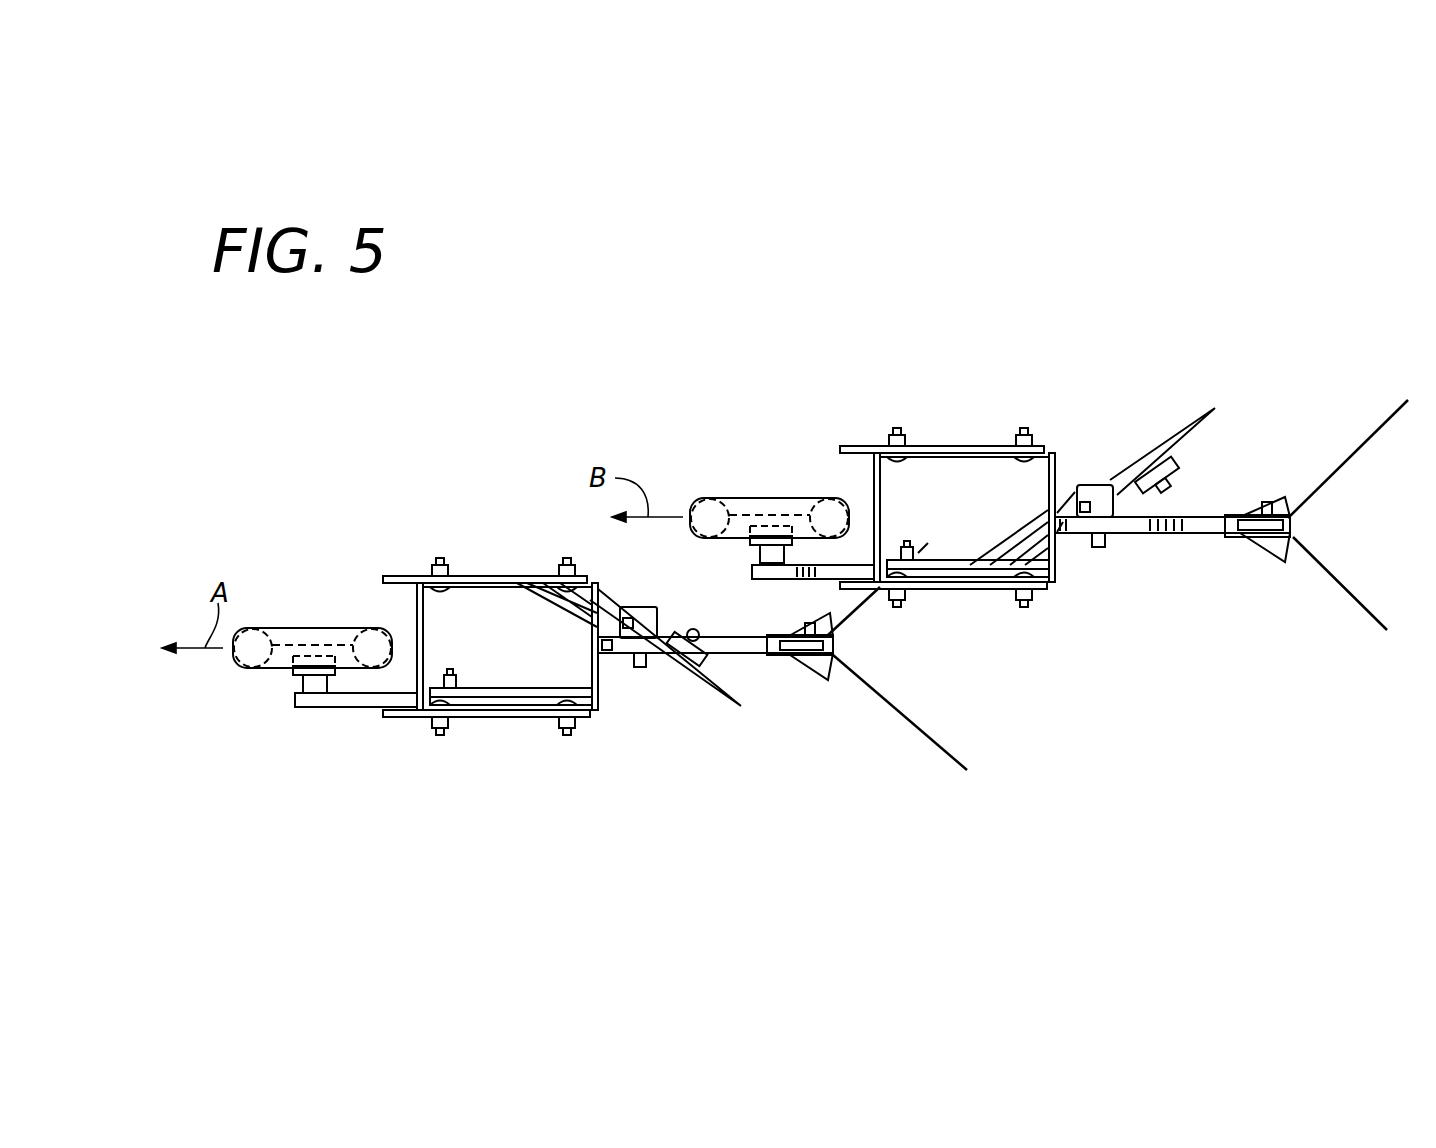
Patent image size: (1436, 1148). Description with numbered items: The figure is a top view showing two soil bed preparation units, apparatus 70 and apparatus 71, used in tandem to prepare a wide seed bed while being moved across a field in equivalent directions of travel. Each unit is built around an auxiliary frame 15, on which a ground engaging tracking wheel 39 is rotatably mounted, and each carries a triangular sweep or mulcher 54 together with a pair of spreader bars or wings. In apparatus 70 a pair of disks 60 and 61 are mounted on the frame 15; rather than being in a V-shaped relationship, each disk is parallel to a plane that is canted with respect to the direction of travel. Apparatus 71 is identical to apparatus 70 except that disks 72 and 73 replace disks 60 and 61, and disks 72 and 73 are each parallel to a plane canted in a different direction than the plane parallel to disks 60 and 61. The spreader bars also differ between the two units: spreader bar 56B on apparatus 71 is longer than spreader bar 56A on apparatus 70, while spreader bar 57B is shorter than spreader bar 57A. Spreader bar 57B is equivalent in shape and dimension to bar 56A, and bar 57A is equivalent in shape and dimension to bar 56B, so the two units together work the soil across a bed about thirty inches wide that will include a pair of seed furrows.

The auxiliary frame 15 is at (473, 566).
The ground engaging tracking wheel 39 is at (318, 627).
The triangular sweep or mulcher 54 is at (810, 672).
The spreader bar 56A is at (857, 615).
The spreader bar 56B is at (1365, 438).
The spreader bar 57A is at (913, 727).
The spreader bar 57B is at (1355, 603).
The disk 60 is at (542, 600).
The disk 61 is at (708, 693).
The soil bed preparation apparatus 70 is at (410, 551).
The apparatus 71 is at (854, 358).
The disk 72 is at (1167, 442).
The disk 73 is at (1010, 538).